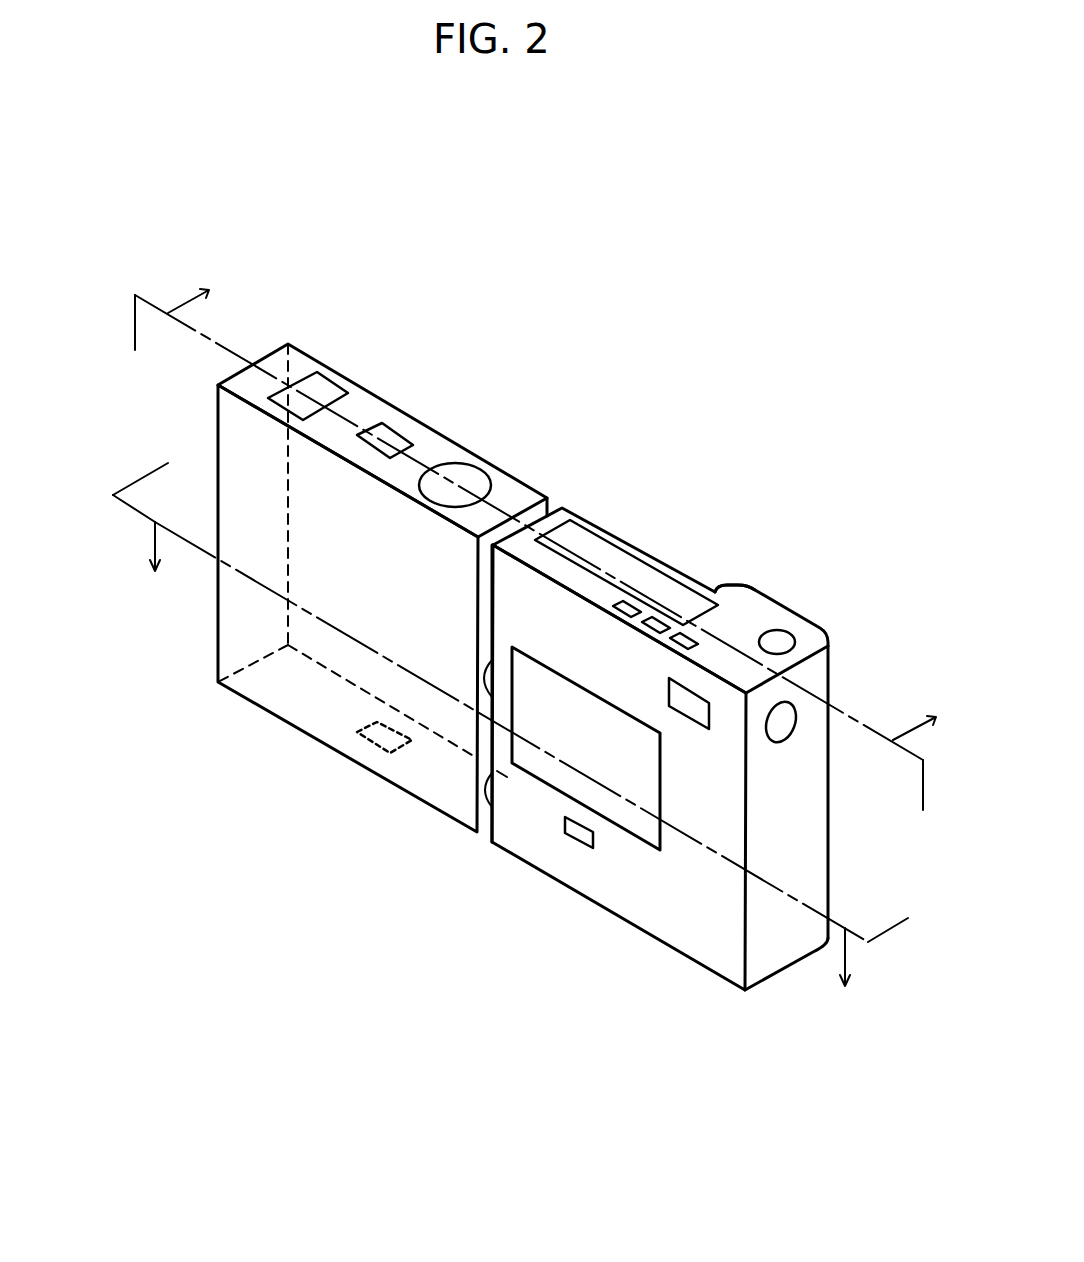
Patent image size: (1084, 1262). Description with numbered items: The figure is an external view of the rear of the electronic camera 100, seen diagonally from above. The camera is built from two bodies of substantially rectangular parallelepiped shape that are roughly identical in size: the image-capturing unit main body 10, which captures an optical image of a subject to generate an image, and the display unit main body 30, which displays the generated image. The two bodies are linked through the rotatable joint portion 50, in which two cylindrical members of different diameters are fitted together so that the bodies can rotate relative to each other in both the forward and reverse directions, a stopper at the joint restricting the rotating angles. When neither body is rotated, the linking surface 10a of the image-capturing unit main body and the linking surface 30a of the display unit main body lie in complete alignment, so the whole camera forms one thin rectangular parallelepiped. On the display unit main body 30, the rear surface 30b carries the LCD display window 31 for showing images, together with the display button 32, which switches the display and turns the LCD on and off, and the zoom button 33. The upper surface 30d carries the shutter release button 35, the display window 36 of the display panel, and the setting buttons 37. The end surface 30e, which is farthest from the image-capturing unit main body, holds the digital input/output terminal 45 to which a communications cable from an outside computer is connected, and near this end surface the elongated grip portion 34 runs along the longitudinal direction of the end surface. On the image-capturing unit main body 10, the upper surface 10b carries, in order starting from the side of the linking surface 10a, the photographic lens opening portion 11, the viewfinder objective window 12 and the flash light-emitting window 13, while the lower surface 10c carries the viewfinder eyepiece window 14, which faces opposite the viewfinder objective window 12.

The electronic camera 100 is at (788, 146).
The image-capturing unit main body 10 is at (417, 282).
The linking surface 10a is at (485, 807).
The top surface of first unit 10b is at (520, 497).
The lower surface 10c is at (272, 692).
The photographic lens opening portion 11 is at (457, 480).
The viewfinder objective window 12 is at (385, 437).
The flash light-emitting window 13 is at (320, 390).
The viewfinder eyepiece window 14 is at (355, 762).
The display unit main body 30 is at (732, 415).
The linking surface 30a is at (487, 803).
The rear surface 30b is at (710, 933).
The upper surface 30d is at (763, 603).
The end surface 30e is at (763, 960).
The LCD display window 31 is at (626, 817).
The display button 32 is at (585, 838).
The zoom button 33 is at (693, 715).
The elongated grip portion 34 is at (807, 615).
The shutter release button 35 is at (787, 642).
The display window 36 is at (610, 558).
The setting buttons 37 is at (687, 637).
The digital input/output terminal 45 is at (788, 722).
The rotatable joint portion 50 is at (487, 682).